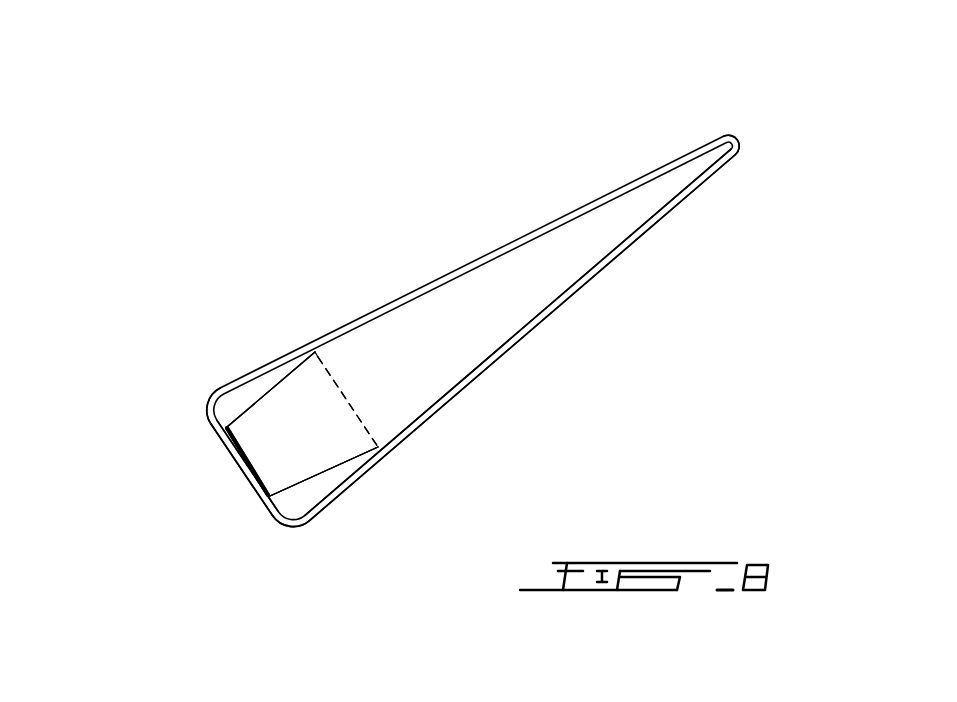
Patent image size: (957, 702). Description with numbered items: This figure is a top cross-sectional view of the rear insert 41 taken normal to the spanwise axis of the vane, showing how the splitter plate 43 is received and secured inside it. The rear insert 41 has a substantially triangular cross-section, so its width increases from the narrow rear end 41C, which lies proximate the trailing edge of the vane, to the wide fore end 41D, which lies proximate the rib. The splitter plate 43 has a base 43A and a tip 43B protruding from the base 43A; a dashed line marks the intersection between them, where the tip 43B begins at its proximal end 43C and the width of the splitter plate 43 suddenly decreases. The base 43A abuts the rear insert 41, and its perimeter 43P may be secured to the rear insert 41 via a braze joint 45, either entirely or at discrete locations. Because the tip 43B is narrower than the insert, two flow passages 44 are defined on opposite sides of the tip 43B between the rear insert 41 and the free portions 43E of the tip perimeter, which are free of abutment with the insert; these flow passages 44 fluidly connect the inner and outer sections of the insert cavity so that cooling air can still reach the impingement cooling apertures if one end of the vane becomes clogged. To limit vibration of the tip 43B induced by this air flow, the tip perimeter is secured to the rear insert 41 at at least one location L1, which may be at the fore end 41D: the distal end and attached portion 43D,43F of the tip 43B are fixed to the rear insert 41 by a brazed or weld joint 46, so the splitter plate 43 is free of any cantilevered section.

The rear insert 41 is at (767, 102).
The rear end 41C is at (741, 144).
The fore end 41D is at (207, 412).
The splitter plate 43 is at (391, 346).
The base 43A is at (455, 352).
The tip 43B is at (320, 430).
The proximal end 43C is at (354, 414).
The distal end and attached portion 43D,43F is at (242, 463).
The free portion 43E is at (289, 380).
The perimeter 43P is at (620, 243).
The flow passage 44 is at (247, 382).
The braze joint 45 is at (592, 268).
The brazed or weld joint 46 is at (243, 483).
The location L1 is at (227, 441).